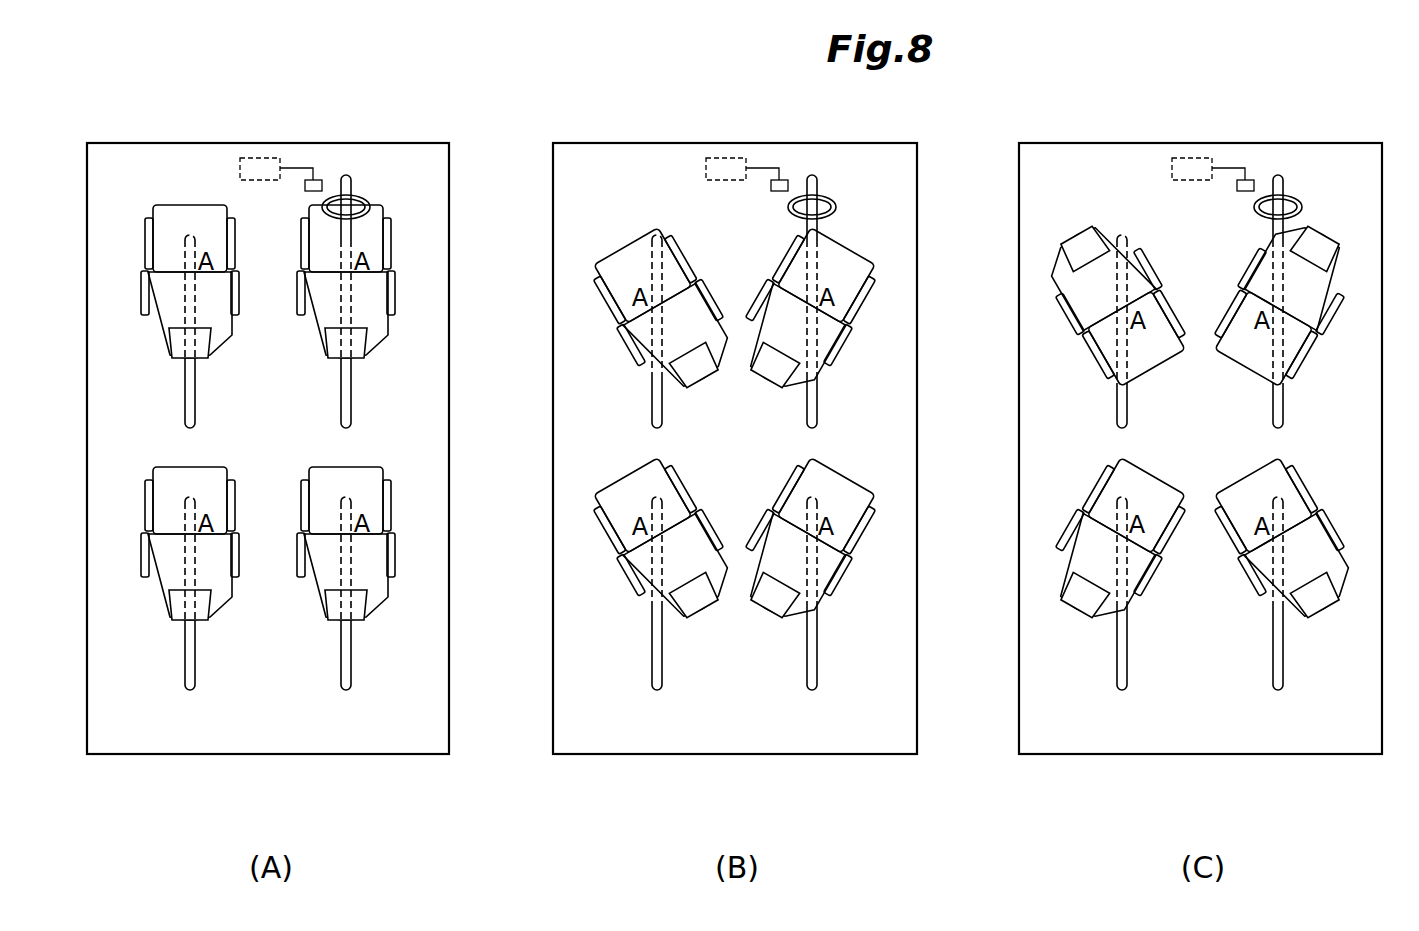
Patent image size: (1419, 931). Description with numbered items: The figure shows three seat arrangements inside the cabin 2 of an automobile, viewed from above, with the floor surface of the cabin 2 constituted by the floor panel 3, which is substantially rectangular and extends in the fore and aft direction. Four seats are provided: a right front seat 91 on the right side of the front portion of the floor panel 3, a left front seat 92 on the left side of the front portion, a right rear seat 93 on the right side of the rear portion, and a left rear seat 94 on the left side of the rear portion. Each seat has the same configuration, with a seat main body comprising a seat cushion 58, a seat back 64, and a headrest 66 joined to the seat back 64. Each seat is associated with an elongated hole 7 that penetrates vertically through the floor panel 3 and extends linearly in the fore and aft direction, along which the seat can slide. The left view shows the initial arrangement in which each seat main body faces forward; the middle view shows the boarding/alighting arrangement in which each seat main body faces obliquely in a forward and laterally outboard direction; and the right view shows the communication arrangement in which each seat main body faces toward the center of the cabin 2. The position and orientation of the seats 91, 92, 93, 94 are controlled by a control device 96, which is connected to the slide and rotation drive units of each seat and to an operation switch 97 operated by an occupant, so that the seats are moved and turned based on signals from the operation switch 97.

The cabin 2 is at (117, 188).
The floor panel 3 is at (175, 143).
The elongated hole 7 is at (353, 410).
The seat cushion 58 is at (384, 212).
The seat back 64 is at (381, 293).
The headrest 66 is at (335, 355).
The right front seat 91 is at (828, 316).
The left front seat 92 is at (230, 348).
The right rear seat 93 is at (386, 610).
The left rear seat 94 is at (230, 610).
The control device 96 is at (263, 157).
The operation switch 97 is at (318, 178).